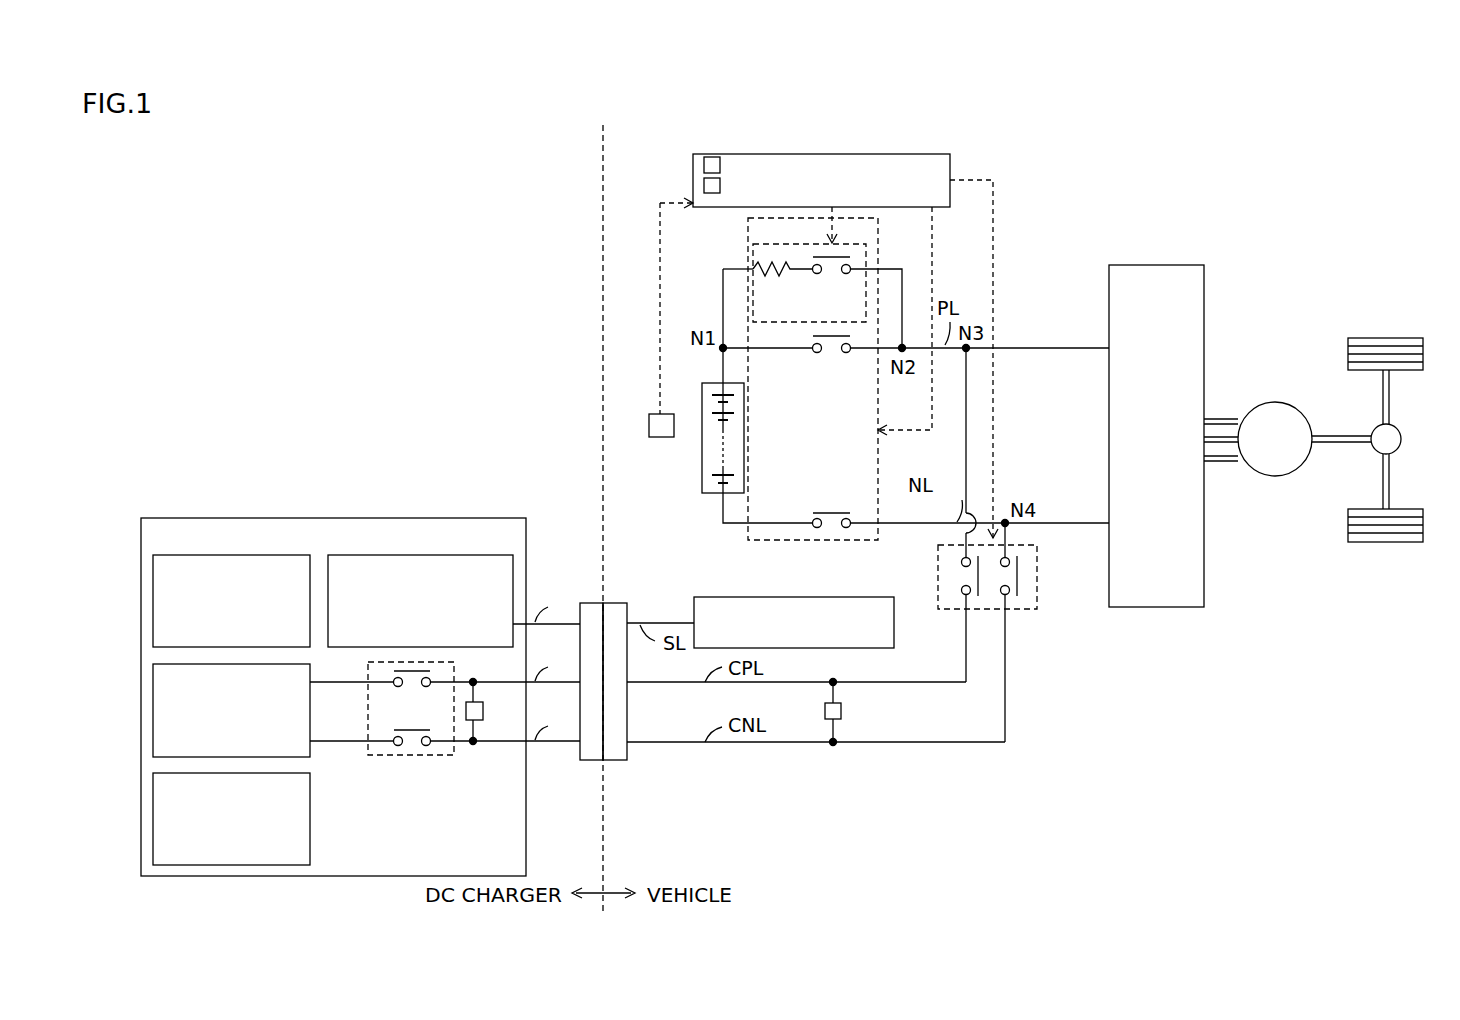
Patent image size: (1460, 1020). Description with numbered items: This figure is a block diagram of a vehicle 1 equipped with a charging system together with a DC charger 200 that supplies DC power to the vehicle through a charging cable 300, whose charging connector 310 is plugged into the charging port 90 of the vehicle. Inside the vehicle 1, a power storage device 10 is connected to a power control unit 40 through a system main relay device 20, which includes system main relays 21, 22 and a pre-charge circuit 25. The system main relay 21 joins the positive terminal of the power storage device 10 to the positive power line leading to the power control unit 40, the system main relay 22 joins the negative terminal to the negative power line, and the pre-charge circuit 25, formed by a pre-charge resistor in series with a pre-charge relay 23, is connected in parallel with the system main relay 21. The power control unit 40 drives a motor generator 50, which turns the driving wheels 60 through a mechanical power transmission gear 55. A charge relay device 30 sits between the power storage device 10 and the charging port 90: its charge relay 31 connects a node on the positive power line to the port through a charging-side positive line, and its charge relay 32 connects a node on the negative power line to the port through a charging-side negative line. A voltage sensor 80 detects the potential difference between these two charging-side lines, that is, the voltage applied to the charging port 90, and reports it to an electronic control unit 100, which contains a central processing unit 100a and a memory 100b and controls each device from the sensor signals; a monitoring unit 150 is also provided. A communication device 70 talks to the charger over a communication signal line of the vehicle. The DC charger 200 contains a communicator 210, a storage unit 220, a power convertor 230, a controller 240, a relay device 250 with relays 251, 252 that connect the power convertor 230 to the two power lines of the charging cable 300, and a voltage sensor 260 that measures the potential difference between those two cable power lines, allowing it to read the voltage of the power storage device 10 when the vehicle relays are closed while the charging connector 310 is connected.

The vehicle 1 is at (1358, 168).
The power storage device 10 is at (718, 383).
The system main relay device 20 is at (748, 228).
The system main relay 21 is at (831, 354).
The system main relay 22 is at (831, 529).
The pre-charge relay 23 is at (831, 275).
The pre-charge circuit 25 is at (817, 295).
The charge relay device 30 is at (993, 545).
The charge relay 31 is at (960, 575).
The charge relay 32 is at (1017, 578).
The power control unit 40 is at (1162, 264).
The motor generator 50 is at (1283, 399).
The mechanical power transmission gear 55 is at (1400, 427).
The driving wheels 60 is at (1410, 338).
The communication device 70 is at (715, 598).
The voltage sensor 80 is at (843, 713).
The charging port 90 is at (613, 603).
The electronic control unit 100 is at (727, 153).
The central processing unit 100a is at (700, 189).
The memory 100b is at (700, 166).
The monitoring unit 150 is at (662, 439).
The DC charger 200 is at (467, 517).
The communicator 210 is at (462, 557).
The storage unit 220 is at (153, 602).
The power convertor 230 is at (153, 711).
The controller 240 is at (153, 822).
The relay device 250 is at (410, 737).
The relay 251 is at (410, 688).
The relay 252 is at (410, 747).
The voltage sensor 260 is at (467, 732).
The charging cable 300 is at (557, 542).
The charging connector 310 is at (592, 603).